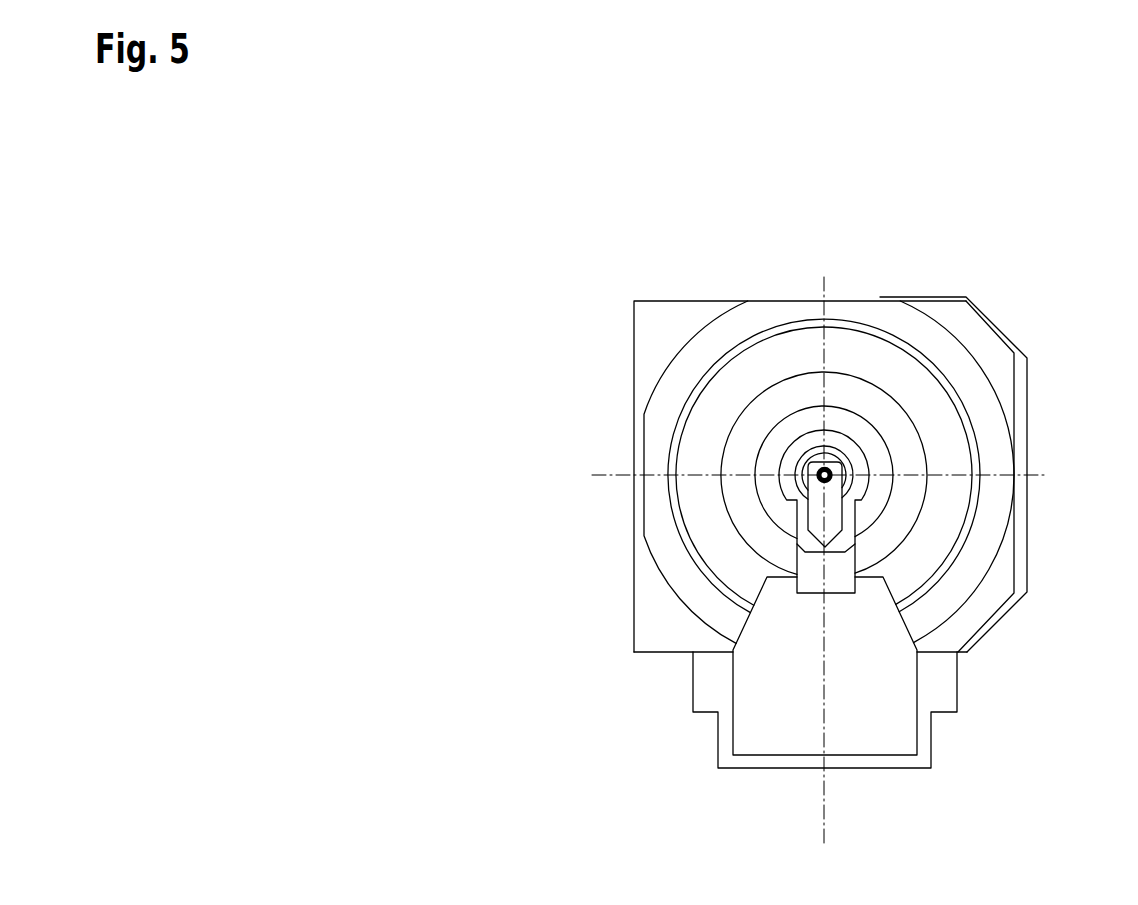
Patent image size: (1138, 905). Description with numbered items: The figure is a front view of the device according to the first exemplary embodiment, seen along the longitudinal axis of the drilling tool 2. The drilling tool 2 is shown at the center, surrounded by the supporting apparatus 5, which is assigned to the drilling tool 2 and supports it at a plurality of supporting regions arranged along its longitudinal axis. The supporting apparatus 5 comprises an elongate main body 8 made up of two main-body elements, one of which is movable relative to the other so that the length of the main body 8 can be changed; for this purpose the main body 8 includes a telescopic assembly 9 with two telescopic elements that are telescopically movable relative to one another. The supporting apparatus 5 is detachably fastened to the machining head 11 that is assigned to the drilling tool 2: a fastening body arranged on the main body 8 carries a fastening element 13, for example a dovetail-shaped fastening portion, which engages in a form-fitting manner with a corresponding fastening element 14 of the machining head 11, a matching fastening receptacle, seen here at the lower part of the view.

The machining head 11 is at (714, 284).
The drilling tool 2 is at (836, 462).
The supporting apparatus 5 is at (870, 497).
The main body 8 is at (862, 521).
The telescopic assembly 9 is at (862, 521).
The fastening element 13 is at (885, 733).
The fastening element 14 is at (923, 760).